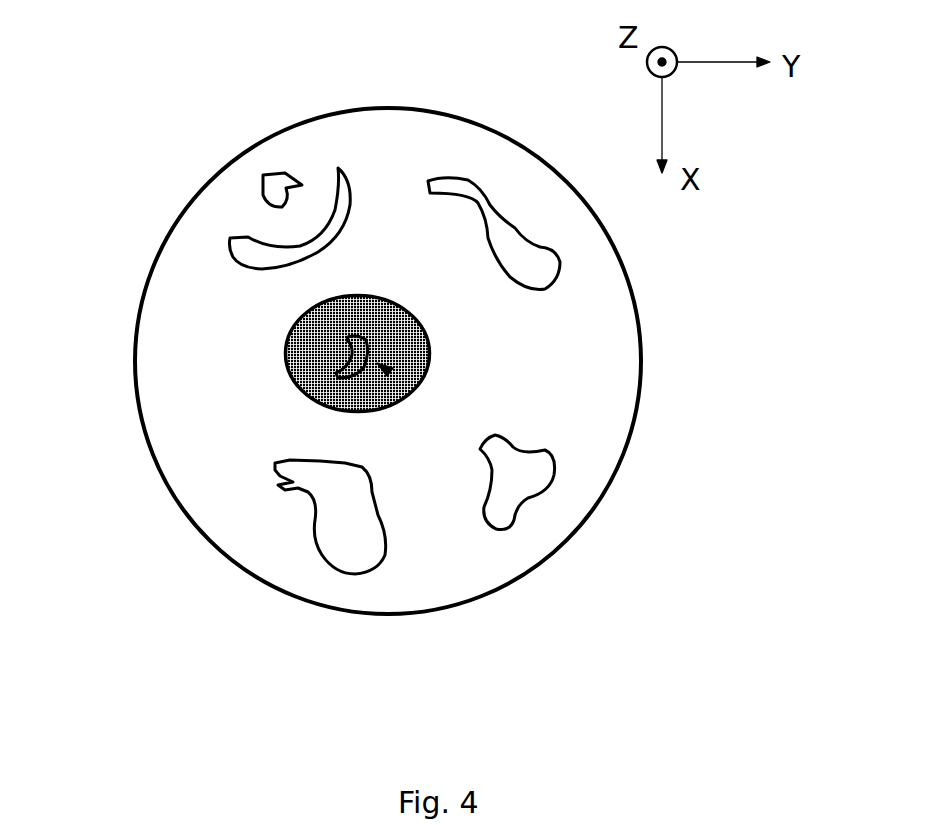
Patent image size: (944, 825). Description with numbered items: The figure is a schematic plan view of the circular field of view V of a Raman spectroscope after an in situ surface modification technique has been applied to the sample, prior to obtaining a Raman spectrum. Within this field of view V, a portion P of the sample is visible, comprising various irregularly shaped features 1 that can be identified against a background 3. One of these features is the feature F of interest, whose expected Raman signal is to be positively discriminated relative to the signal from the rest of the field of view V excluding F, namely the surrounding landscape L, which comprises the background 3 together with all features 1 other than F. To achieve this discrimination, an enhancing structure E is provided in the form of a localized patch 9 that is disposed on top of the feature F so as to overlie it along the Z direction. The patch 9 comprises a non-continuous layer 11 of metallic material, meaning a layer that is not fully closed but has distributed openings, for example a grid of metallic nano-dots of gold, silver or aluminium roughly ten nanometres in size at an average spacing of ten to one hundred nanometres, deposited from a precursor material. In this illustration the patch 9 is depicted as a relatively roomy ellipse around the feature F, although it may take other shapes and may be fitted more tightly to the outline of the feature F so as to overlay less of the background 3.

The features 1 is at (263, 190).
The background 3 is at (473, 577).
The patch 9 is at (286, 358).
The non-continuous layer 11 is at (398, 342).
The landscape L is at (393, 158).
The portion P is at (175, 283).
The enhancing structure E is at (376, 272).
The feature F is at (391, 373).
The field of view V is at (618, 250).